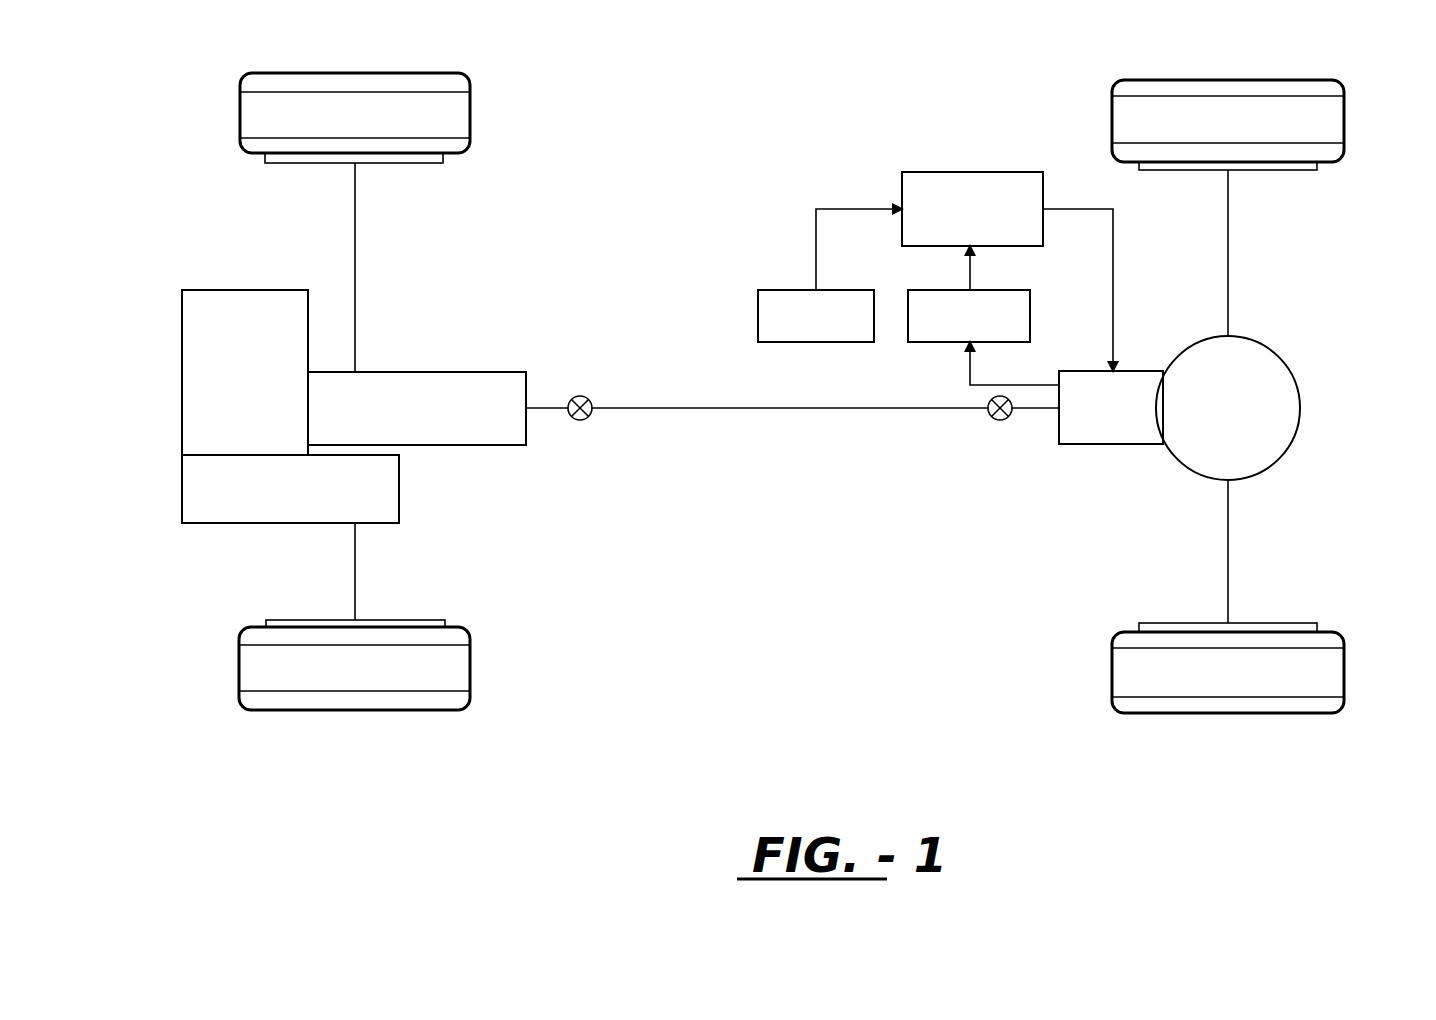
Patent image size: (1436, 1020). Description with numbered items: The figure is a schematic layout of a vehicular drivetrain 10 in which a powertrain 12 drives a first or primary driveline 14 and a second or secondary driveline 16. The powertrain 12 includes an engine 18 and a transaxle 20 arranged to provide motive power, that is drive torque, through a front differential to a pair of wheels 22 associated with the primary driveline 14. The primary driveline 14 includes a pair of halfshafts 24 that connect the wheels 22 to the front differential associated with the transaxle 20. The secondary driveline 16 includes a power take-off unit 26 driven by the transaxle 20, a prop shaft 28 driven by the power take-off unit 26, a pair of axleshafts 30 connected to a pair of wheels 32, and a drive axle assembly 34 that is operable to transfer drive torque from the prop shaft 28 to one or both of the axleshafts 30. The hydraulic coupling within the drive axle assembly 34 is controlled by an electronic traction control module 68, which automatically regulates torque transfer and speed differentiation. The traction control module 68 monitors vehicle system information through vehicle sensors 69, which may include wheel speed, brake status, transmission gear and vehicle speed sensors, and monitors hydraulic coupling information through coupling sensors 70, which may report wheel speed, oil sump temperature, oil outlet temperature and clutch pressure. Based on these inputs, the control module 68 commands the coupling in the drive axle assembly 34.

The vehicular drivetrain 10 is at (750, 152).
The powertrain 12 is at (218, 553).
The primary driveline 14 is at (430, 306).
The secondary driveline 16 is at (1022, 463).
The engine 18 is at (245, 372).
The transaxle 20 is at (290, 489).
The wheels 22 is at (450, 112).
The halfshafts 24 is at (355, 216).
The power take-off unit 26 is at (433, 372).
The prop shaft 28 is at (745, 409).
The axleshafts 30 is at (1228, 241).
The wheels 32 is at (1315, 113).
The drive axle assembly 34 is at (1260, 432).
The electronic traction control module 68 is at (970, 172).
The vehicle sensors 69 is at (758, 320).
The coupling sensors 70 is at (1030, 330).